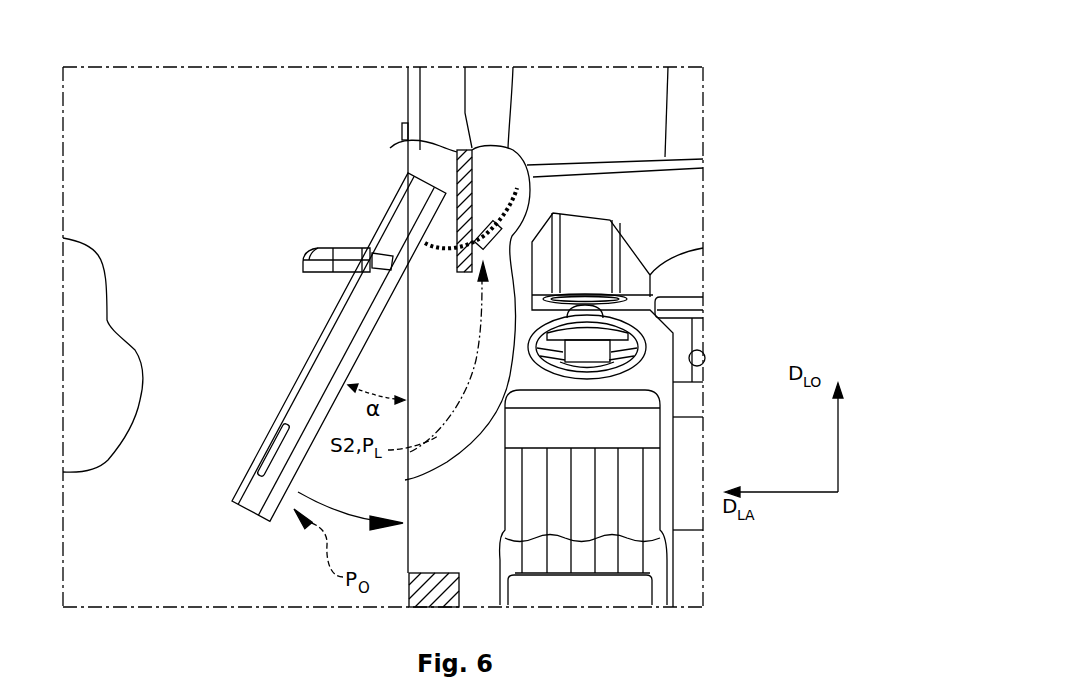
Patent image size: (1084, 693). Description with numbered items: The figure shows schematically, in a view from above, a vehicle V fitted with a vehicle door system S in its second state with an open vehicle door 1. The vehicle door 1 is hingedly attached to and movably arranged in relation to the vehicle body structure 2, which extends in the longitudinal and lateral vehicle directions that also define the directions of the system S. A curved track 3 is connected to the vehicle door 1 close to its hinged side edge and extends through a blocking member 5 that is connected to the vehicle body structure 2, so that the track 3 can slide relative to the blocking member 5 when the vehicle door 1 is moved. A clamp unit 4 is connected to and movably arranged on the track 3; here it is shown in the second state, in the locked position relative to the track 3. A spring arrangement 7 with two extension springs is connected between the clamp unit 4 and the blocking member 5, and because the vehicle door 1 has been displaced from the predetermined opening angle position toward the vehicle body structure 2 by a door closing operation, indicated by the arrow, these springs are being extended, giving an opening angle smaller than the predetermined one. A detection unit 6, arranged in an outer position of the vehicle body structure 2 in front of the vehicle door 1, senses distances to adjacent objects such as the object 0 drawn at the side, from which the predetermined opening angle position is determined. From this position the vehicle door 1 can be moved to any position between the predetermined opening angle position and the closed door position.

The vehicle body contour 0 is at (88, 423).
The vehicle door 1 is at (323, 372).
The vehicle body structure 2 is at (405, 107).
The track 3 is at (524, 224).
The clamp unit 4 is at (406, 478).
The blocking member 5 is at (407, 167).
The detection unit 6 is at (400, 131).
The spring arrangement 7 is at (483, 230).
The vehicle door system S is at (716, 47).
The vehicle V is at (670, 212).